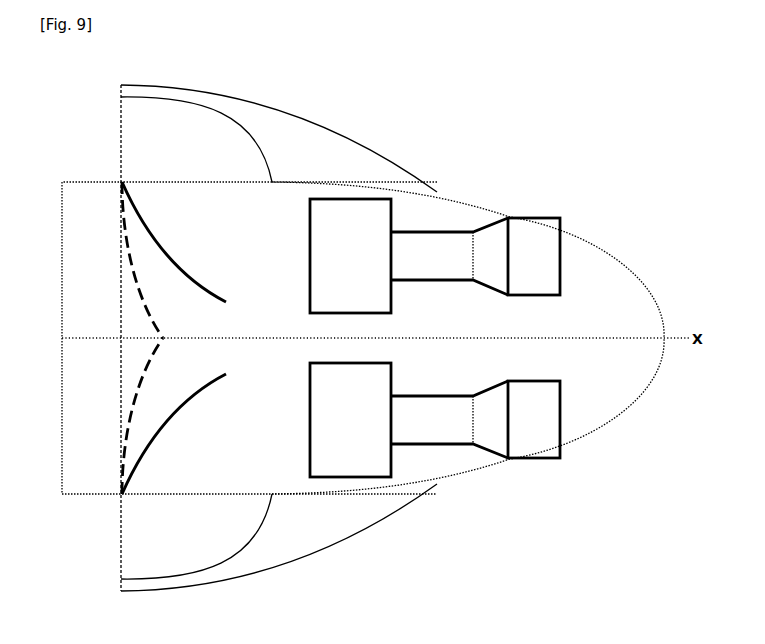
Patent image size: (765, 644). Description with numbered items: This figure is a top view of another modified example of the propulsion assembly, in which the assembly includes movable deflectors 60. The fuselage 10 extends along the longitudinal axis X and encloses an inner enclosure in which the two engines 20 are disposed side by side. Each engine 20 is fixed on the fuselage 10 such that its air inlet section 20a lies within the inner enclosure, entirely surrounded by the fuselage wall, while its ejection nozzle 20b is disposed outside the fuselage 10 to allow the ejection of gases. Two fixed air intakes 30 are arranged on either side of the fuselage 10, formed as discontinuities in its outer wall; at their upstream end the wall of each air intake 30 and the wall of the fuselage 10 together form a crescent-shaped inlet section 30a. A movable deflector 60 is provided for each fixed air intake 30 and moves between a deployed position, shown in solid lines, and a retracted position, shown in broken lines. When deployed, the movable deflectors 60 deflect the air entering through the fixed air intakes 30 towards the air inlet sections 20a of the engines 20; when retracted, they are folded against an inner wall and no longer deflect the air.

The fuselage 10 is at (85, 197).
The fixed air intake 30 is at (200, 110).
The inlet section 30a is at (120, 133).
The movable deflector 60 is at (206, 292).
The engine 20 is at (432, 239).
The air inlet section 20a is at (304, 258).
The ejection nozzle 20b is at (549, 272).